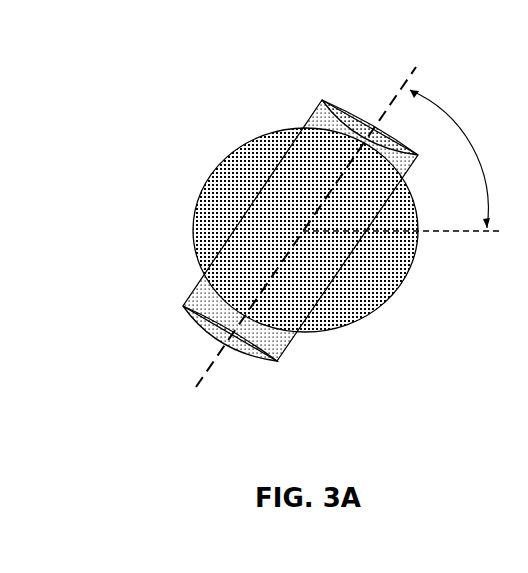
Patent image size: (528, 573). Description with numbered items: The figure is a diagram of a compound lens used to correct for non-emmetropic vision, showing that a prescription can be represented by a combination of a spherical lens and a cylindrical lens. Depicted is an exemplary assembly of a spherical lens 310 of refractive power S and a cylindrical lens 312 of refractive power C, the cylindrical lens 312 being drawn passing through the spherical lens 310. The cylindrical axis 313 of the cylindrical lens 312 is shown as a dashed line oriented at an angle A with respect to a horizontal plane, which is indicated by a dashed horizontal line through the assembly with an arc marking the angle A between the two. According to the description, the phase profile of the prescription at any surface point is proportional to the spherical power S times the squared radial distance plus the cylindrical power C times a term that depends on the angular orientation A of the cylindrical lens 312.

The spherical lens 310 is at (243, 230).
The cylindrical lens 312 is at (235, 251).
The cylindrical axis 313 is at (407, 85).
The refractive power of the spherical lens S is at (309, 230).
The refractive power of the cylindrical lens C is at (300, 251).
The angle A is at (402, 160).